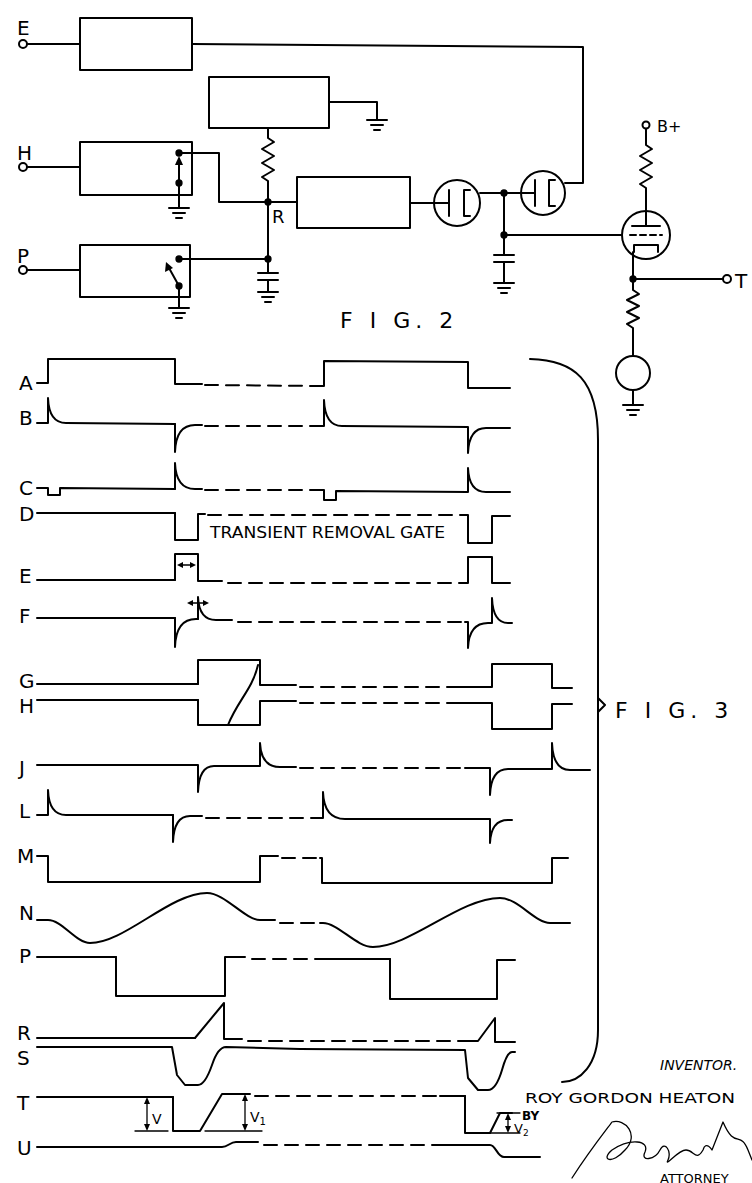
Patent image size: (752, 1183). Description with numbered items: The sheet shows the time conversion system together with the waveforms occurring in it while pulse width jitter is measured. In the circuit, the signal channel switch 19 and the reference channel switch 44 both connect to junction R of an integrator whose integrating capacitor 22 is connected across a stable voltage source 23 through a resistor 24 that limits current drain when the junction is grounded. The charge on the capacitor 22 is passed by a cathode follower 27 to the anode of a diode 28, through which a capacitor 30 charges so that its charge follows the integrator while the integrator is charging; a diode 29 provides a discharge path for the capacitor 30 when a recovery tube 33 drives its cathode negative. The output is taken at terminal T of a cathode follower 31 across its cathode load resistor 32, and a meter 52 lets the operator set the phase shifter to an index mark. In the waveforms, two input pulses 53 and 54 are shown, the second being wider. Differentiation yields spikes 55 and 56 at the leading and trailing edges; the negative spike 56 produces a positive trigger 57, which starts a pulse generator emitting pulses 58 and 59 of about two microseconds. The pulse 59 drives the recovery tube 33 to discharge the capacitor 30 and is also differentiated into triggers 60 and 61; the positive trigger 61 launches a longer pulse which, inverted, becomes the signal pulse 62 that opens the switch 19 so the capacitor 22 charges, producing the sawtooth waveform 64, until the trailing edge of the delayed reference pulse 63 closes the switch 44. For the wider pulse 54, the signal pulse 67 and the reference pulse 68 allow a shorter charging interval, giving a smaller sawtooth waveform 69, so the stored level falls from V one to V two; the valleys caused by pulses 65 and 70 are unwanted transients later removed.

In FIG. 2, the recovery tube 33 is at (192, 31).
In FIG. 2, the stable voltage source 23 is at (325, 77).
In FIG. 2, the resistor 24 is at (276, 162).
In FIG. 2, the signal channel switch 19 is at (130, 142).
In FIG. 2, the reference channel switch 44 is at (164, 246).
In FIG. 2, the integrating capacitor 22 is at (279, 279).
In FIG. 2, the cathode follower 27 is at (347, 177).
In FIG. 2, the diode 28 is at (474, 172).
In FIG. 2, the diode 29 is at (552, 172).
In FIG. 2, the capacitor 30 is at (515, 257).
In FIG. 2, the cathode follower 31 is at (667, 216).
In FIG. 2, the cathode load resistor 32 is at (651, 312).
In FIG. 2, the meter 52 is at (650, 376).
In FIG. 3, the input pulse 53 is at (98, 359).
In FIG. 3, the input pulse 54 is at (425, 361).
In FIG. 3, the positive spike 55 is at (56, 414).
In FIG. 3, the negative spike 56 is at (178, 445).
In FIG. 3, the positive trigger 57 is at (178, 479).
In FIG. 3, the negative pulse 58 is at (175, 530).
In FIG. 3, the positive pulse 59 is at (174, 575).
In FIG. 3, the trigger 60 is at (180, 628).
In FIG. 3, the positive going trigger 61 is at (205, 612).
In FIG. 3, the signal pulse 62 is at (258, 665).
In FIG. 3, the delayed reference pulse 63 is at (192, 996).
In FIG. 3, the sawtooth waveform 64 is at (226, 1028).
In FIG. 3, the pulse 65 is at (182, 1129).
In FIG. 3, the pulse 67 is at (520, 728).
In FIG. 3, the reference pulse 68 is at (415, 998).
In FIG. 3, the sawtooth waveform 69 is at (497, 1033).
In FIG. 3, the pulse 70 is at (477, 1132).